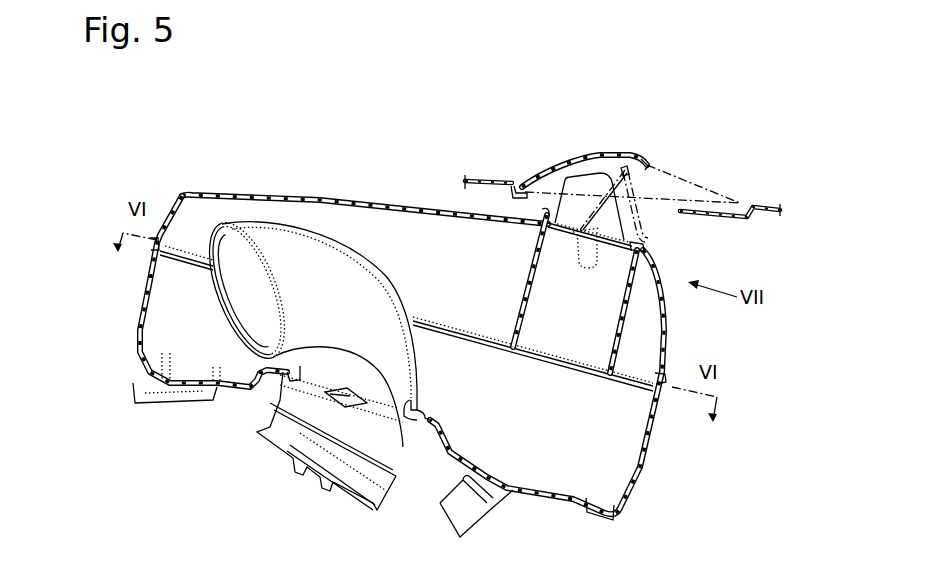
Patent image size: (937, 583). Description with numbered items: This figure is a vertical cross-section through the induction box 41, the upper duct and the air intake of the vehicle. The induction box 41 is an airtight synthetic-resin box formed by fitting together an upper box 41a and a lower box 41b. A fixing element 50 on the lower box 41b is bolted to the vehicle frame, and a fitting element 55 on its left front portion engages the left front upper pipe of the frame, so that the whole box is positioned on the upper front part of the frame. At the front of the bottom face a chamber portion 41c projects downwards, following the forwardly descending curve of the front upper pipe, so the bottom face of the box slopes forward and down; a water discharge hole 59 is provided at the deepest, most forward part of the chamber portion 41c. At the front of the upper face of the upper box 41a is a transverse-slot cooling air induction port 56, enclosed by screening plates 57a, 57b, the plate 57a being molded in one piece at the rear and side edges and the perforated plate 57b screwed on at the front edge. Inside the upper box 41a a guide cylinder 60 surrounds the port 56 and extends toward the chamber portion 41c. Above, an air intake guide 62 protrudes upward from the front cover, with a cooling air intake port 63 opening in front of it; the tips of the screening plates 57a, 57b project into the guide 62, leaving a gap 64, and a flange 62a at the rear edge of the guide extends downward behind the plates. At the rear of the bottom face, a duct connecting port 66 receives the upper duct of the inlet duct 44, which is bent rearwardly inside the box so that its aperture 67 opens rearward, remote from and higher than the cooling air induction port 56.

The induction box 41 is at (362, 339).
The upper box 41a is at (181, 197).
The lower box 41b is at (145, 283).
The chamber portion 41c is at (641, 468).
The inlet duct 44 is at (372, 262).
The fixing element 50 is at (189, 404).
The fitting element 55 is at (471, 522).
The cooling air induction port 56 is at (566, 240).
The screening plate 57a is at (543, 212).
The screening plate 57b is at (646, 240).
The water discharge hole 59 is at (600, 508).
The guide cylinder 60 is at (513, 320).
The air intake guide 62 is at (599, 150).
The flange 62a is at (519, 199).
The cooling air intake port 63 is at (672, 190).
The gap 64 is at (573, 167).
The duct connecting port 66 is at (412, 391).
The aperture 67 is at (248, 298).